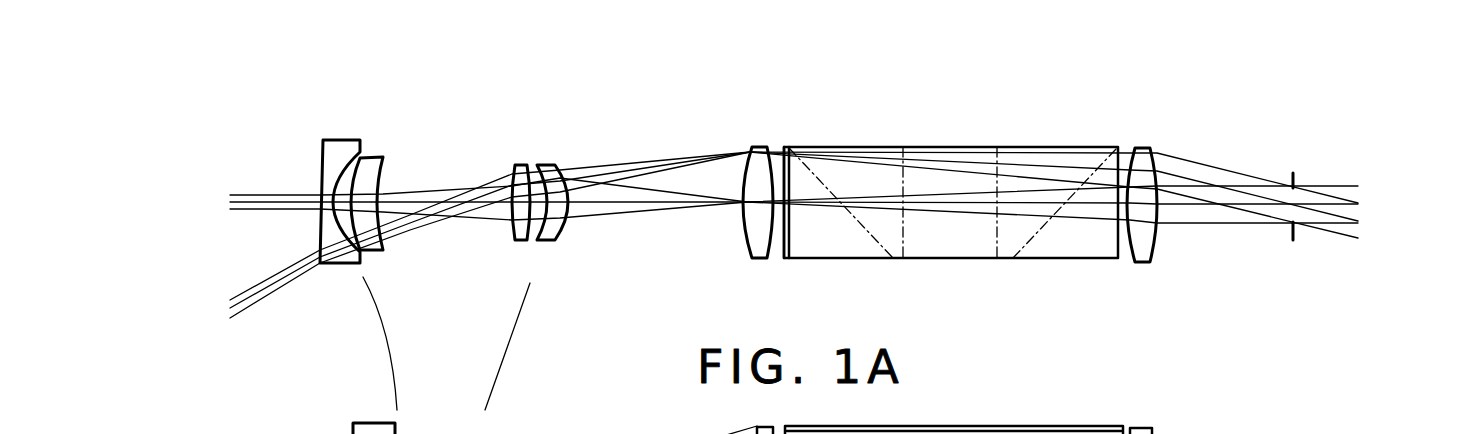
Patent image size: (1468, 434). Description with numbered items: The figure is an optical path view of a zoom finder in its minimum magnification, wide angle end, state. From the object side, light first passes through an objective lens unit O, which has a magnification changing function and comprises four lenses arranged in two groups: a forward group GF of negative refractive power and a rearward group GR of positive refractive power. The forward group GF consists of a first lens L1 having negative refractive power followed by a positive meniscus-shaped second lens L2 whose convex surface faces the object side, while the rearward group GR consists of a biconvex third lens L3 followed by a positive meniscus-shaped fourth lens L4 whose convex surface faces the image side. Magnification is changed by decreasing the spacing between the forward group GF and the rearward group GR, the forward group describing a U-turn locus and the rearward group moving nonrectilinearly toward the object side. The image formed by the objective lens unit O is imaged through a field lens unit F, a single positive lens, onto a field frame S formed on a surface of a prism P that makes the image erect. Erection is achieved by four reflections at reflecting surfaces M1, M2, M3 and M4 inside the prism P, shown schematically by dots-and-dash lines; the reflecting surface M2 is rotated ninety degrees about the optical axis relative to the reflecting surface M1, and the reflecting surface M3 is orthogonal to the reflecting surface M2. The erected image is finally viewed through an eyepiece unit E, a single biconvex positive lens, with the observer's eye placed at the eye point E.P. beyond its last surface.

The objective lens unit O is at (557, 84).
The forward group GF is at (385, 130).
The rearward group GR is at (567, 130).
The first lens L1 is at (335, 265).
The second lens L2 is at (377, 252).
The third lens L3 is at (517, 243).
The fourth lens L4 is at (553, 243).
The field lens unit F is at (755, 145).
The field frame S is at (786, 145).
The prism P is at (1118, 125).
The reflecting surface M1 is at (872, 235).
The reflecting surface M2 is at (905, 237).
The reflecting surface M3 is at (998, 237).
The reflecting surface M4 is at (1028, 238).
The eyepiece unit E is at (1138, 147).
The eye point E.P. is at (1293, 173).